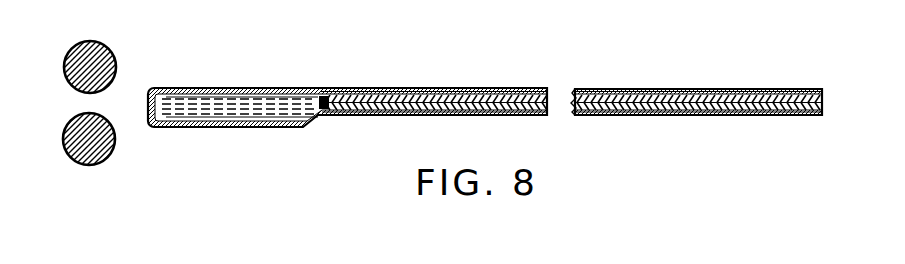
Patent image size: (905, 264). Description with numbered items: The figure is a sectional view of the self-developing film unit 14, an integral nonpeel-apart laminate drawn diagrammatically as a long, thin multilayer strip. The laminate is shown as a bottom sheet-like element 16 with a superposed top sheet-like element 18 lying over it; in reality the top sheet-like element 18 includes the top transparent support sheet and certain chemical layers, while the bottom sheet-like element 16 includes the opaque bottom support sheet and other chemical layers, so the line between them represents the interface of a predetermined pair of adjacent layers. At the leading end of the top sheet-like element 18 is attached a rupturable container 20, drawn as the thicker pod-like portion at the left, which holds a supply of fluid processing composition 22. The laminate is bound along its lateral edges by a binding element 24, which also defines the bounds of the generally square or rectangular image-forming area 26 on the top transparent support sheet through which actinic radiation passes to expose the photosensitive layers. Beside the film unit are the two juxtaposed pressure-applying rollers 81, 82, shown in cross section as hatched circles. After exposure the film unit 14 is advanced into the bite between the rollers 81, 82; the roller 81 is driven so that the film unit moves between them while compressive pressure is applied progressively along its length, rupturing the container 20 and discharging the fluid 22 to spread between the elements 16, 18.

The self-developing film unit 14 is at (347, 82).
The bottom sheet-like element 16 is at (487, 110).
The top sheet-like element 18 is at (466, 93).
The rupturable container 20 is at (284, 118).
The fluid processing composition 22 is at (237, 112).
The binding element 24 is at (319, 89).
The image-forming area 26 is at (628, 91).
The pressure-applying roller 81 is at (113, 60).
The pressure-applying roller 82 is at (113, 146).